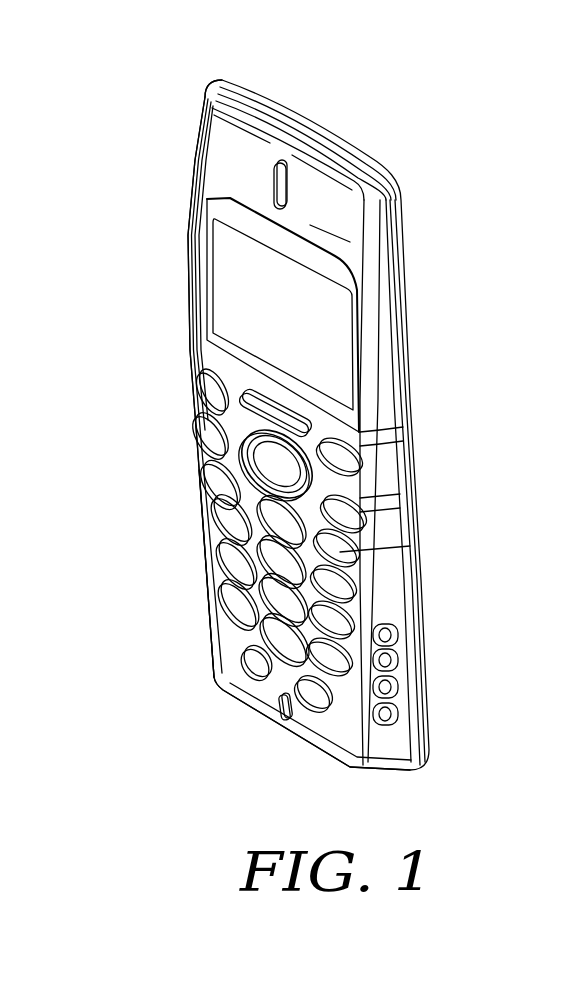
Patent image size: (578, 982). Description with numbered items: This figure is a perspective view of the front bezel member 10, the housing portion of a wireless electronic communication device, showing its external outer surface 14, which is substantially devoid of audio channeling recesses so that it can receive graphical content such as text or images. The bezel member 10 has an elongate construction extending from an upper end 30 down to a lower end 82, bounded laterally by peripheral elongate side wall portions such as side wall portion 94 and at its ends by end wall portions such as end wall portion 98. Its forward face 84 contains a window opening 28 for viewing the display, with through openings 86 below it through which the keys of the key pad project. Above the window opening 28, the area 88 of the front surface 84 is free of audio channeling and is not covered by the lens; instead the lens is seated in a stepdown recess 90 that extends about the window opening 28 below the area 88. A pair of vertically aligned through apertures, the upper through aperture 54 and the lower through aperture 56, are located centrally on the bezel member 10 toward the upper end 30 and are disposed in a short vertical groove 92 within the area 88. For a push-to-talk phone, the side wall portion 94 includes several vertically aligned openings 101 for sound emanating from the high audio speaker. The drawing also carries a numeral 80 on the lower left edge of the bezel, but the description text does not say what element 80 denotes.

The bezel member 10 is at (436, 145).
The outer surface 14 is at (360, 430).
The window opening 28 is at (332, 328).
The upper end 30 is at (322, 114).
The upper through aperture 54 is at (277, 163).
The lower through aperture 56 is at (188, 202).
The lower side edge 80 is at (210, 601).
The lower end 82 is at (289, 750).
The forward face 84 is at (343, 242).
The through openings 86 is at (345, 551).
The area above window opening 88 is at (310, 224).
The stepdown recess 90 is at (188, 297).
The vertical groove 92 is at (287, 190).
The side wall portion 94 is at (393, 472).
The end wall portion 98 is at (225, 80).
The openings 101 is at (385, 633).